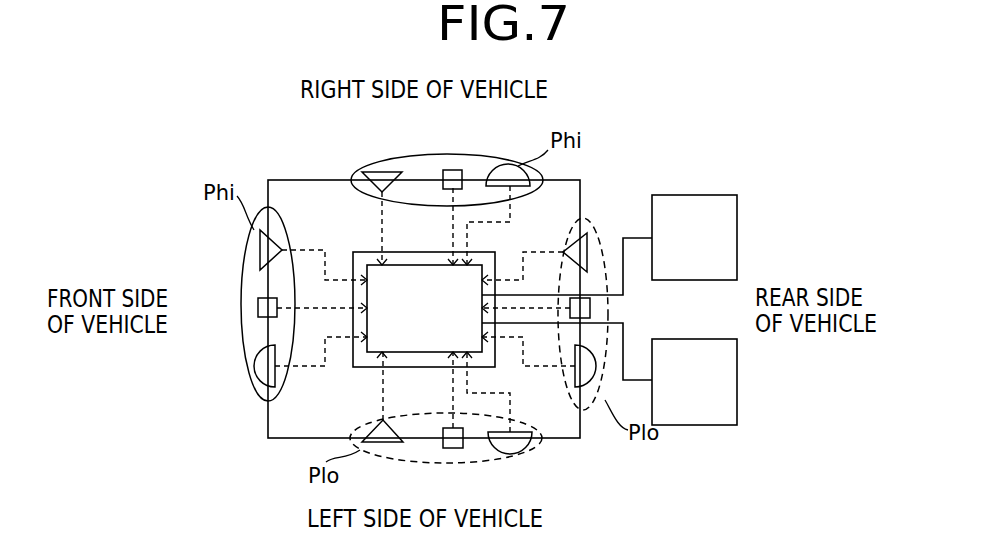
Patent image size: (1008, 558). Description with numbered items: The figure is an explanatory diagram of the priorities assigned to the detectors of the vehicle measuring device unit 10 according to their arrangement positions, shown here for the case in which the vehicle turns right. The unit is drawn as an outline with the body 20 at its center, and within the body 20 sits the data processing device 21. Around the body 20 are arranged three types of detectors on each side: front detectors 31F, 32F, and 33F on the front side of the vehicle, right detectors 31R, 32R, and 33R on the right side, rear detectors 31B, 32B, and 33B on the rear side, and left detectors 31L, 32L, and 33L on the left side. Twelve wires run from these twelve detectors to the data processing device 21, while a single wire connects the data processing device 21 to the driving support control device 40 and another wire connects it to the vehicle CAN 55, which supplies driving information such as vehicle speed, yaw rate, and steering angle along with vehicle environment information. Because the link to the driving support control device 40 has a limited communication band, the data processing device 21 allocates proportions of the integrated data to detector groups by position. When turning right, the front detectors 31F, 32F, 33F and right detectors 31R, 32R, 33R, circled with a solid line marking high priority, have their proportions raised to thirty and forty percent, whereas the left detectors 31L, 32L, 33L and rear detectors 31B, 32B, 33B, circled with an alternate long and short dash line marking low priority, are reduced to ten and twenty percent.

The vehicle measuring device unit 10 is at (332, 178).
The body 20 is at (355, 252).
The data processing device 21 is at (437, 319).
The right detector 31R is at (452, 170).
The right detector 32R is at (390, 172).
The right detector 33R is at (512, 168).
The front detector 31F is at (258, 307).
The front detector 32F is at (258, 250).
The front detector 33F is at (258, 368).
The rear detector 31B is at (592, 308).
The rear detector 32B is at (586, 248).
The rear detector 33B is at (588, 385).
The left detector 31L is at (452, 448).
The left detector 32L is at (372, 443).
The left detector 33L is at (513, 445).
The driving support control device 40 is at (682, 249).
The vehicle CAN 55 is at (682, 392).